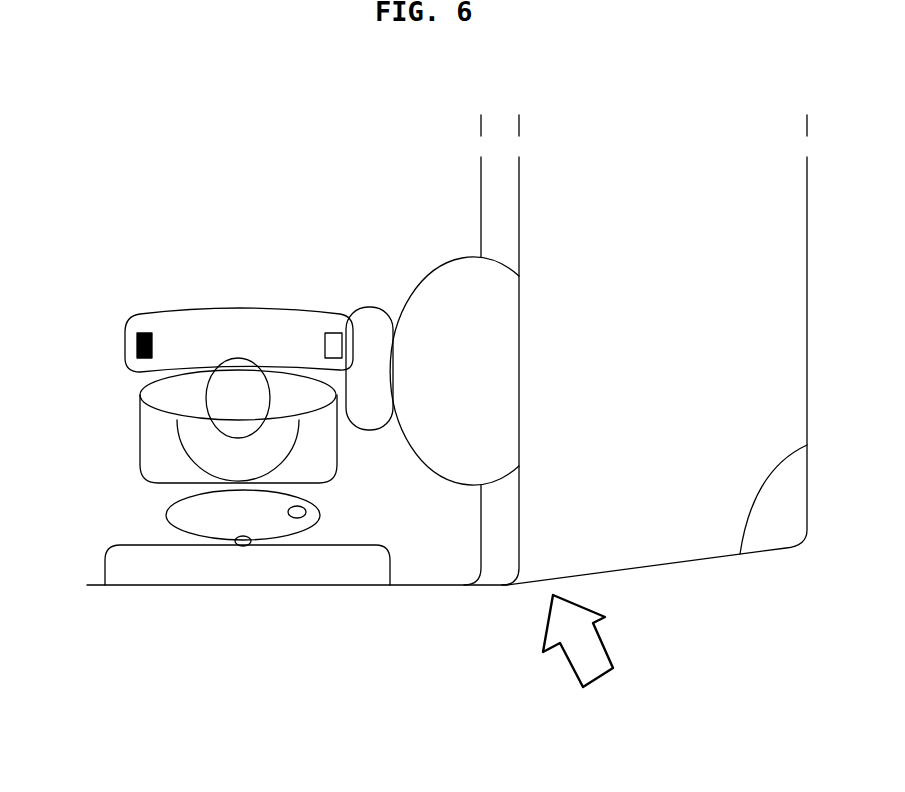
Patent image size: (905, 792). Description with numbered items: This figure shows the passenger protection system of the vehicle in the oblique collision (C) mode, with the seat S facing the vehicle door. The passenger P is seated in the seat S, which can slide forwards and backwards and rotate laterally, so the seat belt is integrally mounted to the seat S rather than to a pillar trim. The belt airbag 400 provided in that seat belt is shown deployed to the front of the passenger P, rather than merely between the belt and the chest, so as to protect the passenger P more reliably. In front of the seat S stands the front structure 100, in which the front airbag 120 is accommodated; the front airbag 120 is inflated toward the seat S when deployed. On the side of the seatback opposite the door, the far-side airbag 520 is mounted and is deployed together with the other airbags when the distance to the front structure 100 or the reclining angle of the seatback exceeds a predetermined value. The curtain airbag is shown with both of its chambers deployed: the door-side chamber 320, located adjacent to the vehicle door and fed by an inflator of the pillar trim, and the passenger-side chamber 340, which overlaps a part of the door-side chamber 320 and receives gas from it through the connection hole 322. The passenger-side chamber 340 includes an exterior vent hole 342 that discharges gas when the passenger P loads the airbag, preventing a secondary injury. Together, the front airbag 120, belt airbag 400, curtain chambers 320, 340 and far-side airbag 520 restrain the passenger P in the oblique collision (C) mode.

The front structure 100 is at (503, 208).
The front airbag 120 is at (440, 262).
The far-side airbag 520 is at (372, 313).
The seat S is at (260, 322).
The passenger P is at (232, 375).
The belt airbag 400 is at (197, 452).
The passenger-side chamber 340 is at (175, 512).
The exterior vent hole 342 is at (297, 518).
The connection hole 322 is at (243, 546).
The door-side chamber 320 is at (178, 570).
The oblique collision mode C is at (582, 668).